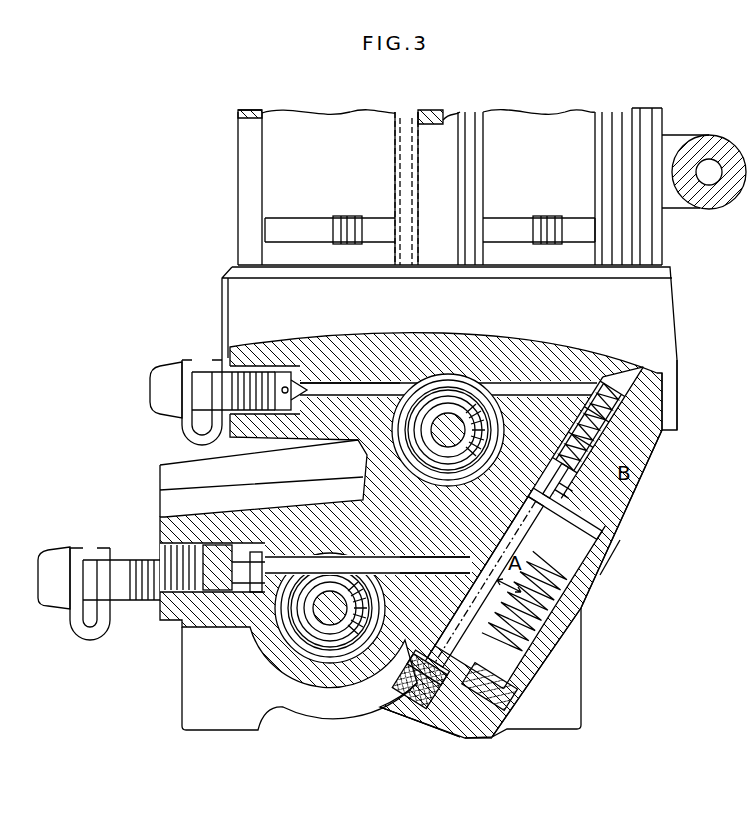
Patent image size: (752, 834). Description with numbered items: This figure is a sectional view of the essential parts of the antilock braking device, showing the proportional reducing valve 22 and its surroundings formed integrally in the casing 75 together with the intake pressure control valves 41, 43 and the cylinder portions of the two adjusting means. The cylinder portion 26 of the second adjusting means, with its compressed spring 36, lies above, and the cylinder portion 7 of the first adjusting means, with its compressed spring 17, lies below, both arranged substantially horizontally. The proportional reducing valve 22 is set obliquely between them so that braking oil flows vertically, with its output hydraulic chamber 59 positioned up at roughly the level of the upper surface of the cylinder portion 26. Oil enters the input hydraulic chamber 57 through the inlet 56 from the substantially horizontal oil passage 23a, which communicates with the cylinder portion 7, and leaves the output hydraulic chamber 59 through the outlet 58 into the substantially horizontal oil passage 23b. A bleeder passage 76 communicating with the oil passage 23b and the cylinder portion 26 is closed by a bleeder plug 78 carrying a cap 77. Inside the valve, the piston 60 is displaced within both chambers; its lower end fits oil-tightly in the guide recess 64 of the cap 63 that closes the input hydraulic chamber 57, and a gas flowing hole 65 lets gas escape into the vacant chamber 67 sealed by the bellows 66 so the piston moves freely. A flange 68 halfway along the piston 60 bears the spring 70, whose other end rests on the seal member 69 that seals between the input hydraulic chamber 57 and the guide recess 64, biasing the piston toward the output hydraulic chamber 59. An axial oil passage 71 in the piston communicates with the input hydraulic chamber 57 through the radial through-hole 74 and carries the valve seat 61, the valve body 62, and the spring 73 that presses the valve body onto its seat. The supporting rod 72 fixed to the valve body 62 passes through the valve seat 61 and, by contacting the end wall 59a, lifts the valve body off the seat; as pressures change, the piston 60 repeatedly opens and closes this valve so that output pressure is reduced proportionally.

The cylinder portion 7 is at (322, 553).
The compressed spring 17 is at (300, 642).
The proportional reducing valve 22 is at (569, 592).
The oil passage 23a is at (435, 561).
The oil passage 23b is at (525, 380).
The cylinder portion 26 is at (432, 382).
The compressed spring 36 is at (428, 470).
The intake pressure control valve 41 is at (350, 172).
The intake pressure control valve 43 is at (555, 177).
The inlet 56 is at (463, 570).
The input hydraulic chamber 57 is at (515, 497).
The outlet 58 is at (582, 383).
The output hydraulic chamber 59 is at (603, 382).
The end wall 59a is at (632, 387).
The piston 60 is at (470, 600).
The valve seat 61 is at (590, 420).
The valve body 62 is at (645, 447).
The cap 63 is at (490, 731).
The guide recess 64 is at (497, 700).
The gas flowing hole 65 is at (456, 690).
The bellows 66 is at (450, 716).
The vacant chamber 67 is at (428, 713).
The flange 68 is at (600, 537).
The seal member 69 is at (527, 684).
The spring 70 is at (562, 633).
The oil passage 71 is at (600, 490).
The supporting rod 72 is at (617, 385).
The spring 73 is at (593, 493).
The through-hole 74 is at (558, 467).
The casing 75 is at (275, 348).
The bleeder passage 76 is at (322, 382).
The cap 77 is at (150, 403).
The bleeder plug 78 is at (262, 414).